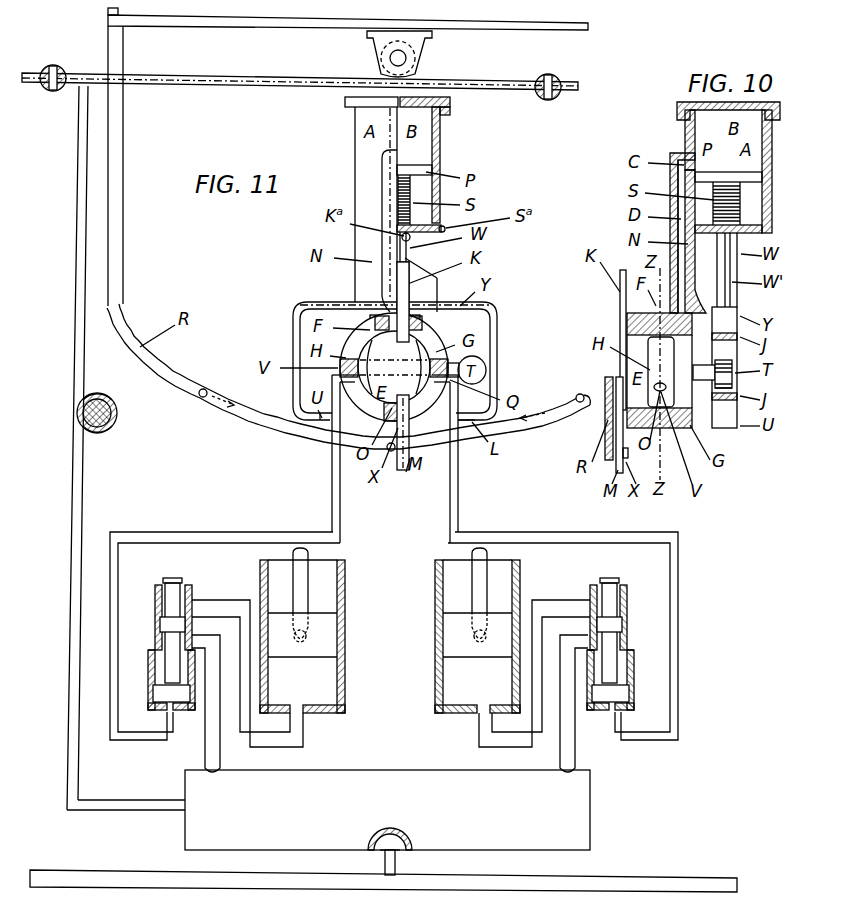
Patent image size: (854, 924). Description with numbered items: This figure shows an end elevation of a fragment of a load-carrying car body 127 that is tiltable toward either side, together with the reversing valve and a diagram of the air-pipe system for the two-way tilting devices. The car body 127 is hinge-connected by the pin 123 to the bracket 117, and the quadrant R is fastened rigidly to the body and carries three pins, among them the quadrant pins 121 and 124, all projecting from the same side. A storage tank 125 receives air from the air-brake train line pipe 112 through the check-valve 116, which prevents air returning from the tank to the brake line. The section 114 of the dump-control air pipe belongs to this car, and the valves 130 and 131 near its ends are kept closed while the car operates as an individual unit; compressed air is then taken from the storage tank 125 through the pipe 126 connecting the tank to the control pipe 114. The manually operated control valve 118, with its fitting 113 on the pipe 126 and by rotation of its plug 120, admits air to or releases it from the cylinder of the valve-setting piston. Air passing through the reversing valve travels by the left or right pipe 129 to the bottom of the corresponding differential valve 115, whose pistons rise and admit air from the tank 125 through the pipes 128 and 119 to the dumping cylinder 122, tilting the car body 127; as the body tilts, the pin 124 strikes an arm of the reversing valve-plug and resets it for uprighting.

The air-brake train line pipe 112 is at (150, 878).
The pipe coupling 113 is at (108, 401).
The control pipe section 114 is at (269, 83).
The differential valve 115 is at (160, 646).
The check-valve 116 is at (405, 838).
The bracket 117 is at (373, 70).
The manually operated control valve 118 is at (112, 412).
The pipe 119 is at (245, 598).
The control valve-plug 120 is at (112, 425).
The quadrant pin 121 is at (203, 389).
The dumping cylinder 122 is at (390, 630).
The hinge pin 123 is at (407, 60).
The quadrant pin 124 is at (576, 394).
The storage tank 125 is at (387, 810).
The pipe 126 is at (78, 336).
The car body 127 is at (297, 22).
The pipe 128 is at (205, 752).
The pipe 129 is at (118, 574).
The valve 130 is at (50, 92).
The valve 131 is at (549, 100).